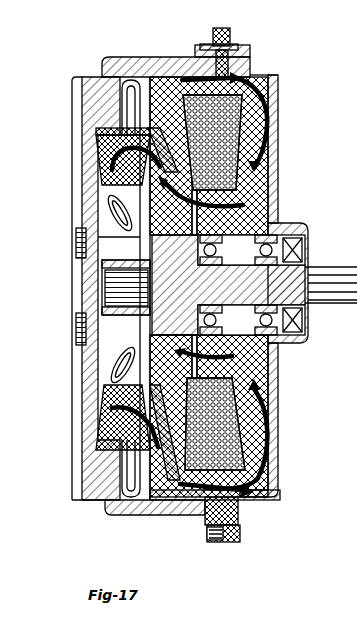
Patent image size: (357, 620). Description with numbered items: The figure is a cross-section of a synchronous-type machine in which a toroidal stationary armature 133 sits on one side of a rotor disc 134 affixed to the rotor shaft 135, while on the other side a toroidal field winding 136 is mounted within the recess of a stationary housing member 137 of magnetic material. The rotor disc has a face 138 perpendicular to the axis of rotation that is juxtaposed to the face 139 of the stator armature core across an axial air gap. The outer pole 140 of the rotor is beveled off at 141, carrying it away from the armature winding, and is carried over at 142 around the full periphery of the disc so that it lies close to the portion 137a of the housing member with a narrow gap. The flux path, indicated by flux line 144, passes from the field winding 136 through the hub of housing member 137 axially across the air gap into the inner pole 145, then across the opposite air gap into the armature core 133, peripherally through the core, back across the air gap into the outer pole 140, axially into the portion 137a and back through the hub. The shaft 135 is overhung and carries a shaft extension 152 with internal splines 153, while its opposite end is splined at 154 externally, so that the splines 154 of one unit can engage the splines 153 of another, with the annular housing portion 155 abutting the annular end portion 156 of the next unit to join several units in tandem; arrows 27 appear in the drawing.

The flow path arrows 27 is at (240, 77).
The toroidal stationary armature 133 is at (110, 150).
The rotor disc 134 is at (162, 124).
The rotor shaft 135 is at (306, 263).
The toroidal field winding 136 is at (262, 117).
The stationary housing member 137 is at (250, 182).
The portion of magnetic member 137a is at (240, 500).
The face of rotor 138 is at (150, 136).
The face of stator armature core 139 is at (140, 410).
The outer pole 140 is at (160, 505).
The bevel 141 is at (202, 505).
The carried-over portion of magnetic material 142 is at (200, 45).
The flux line 144 is at (270, 133).
The inner pole 145 is at (160, 228).
The shaft extension 152 is at (140, 315).
The internal splines 153 is at (115, 286).
The external splines 154 is at (346, 303).
The annular housing portion 155 is at (283, 487).
The annular end portion 156 is at (83, 493).